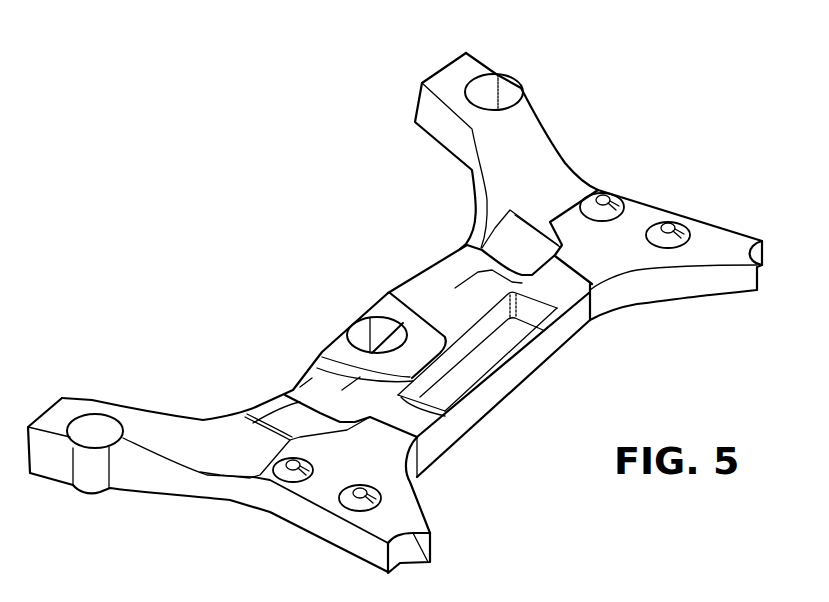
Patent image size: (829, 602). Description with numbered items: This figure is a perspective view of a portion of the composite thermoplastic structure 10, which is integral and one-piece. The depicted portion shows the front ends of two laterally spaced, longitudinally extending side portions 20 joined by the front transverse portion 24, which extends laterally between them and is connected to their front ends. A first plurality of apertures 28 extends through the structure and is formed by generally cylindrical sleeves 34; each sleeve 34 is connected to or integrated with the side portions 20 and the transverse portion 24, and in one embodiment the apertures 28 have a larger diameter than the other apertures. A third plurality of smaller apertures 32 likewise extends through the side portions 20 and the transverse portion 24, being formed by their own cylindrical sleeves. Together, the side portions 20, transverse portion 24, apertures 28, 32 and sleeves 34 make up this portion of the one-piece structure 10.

The composite thermoplastic structure 10 is at (689, 108).
The side portions 20 is at (440, 127).
The front transverse portion 24 is at (523, 380).
The first plurality of apertures 28 is at (478, 84).
The third plurality of apertures 32 is at (605, 200).
The cylindrical sleeves 34 is at (522, 92).